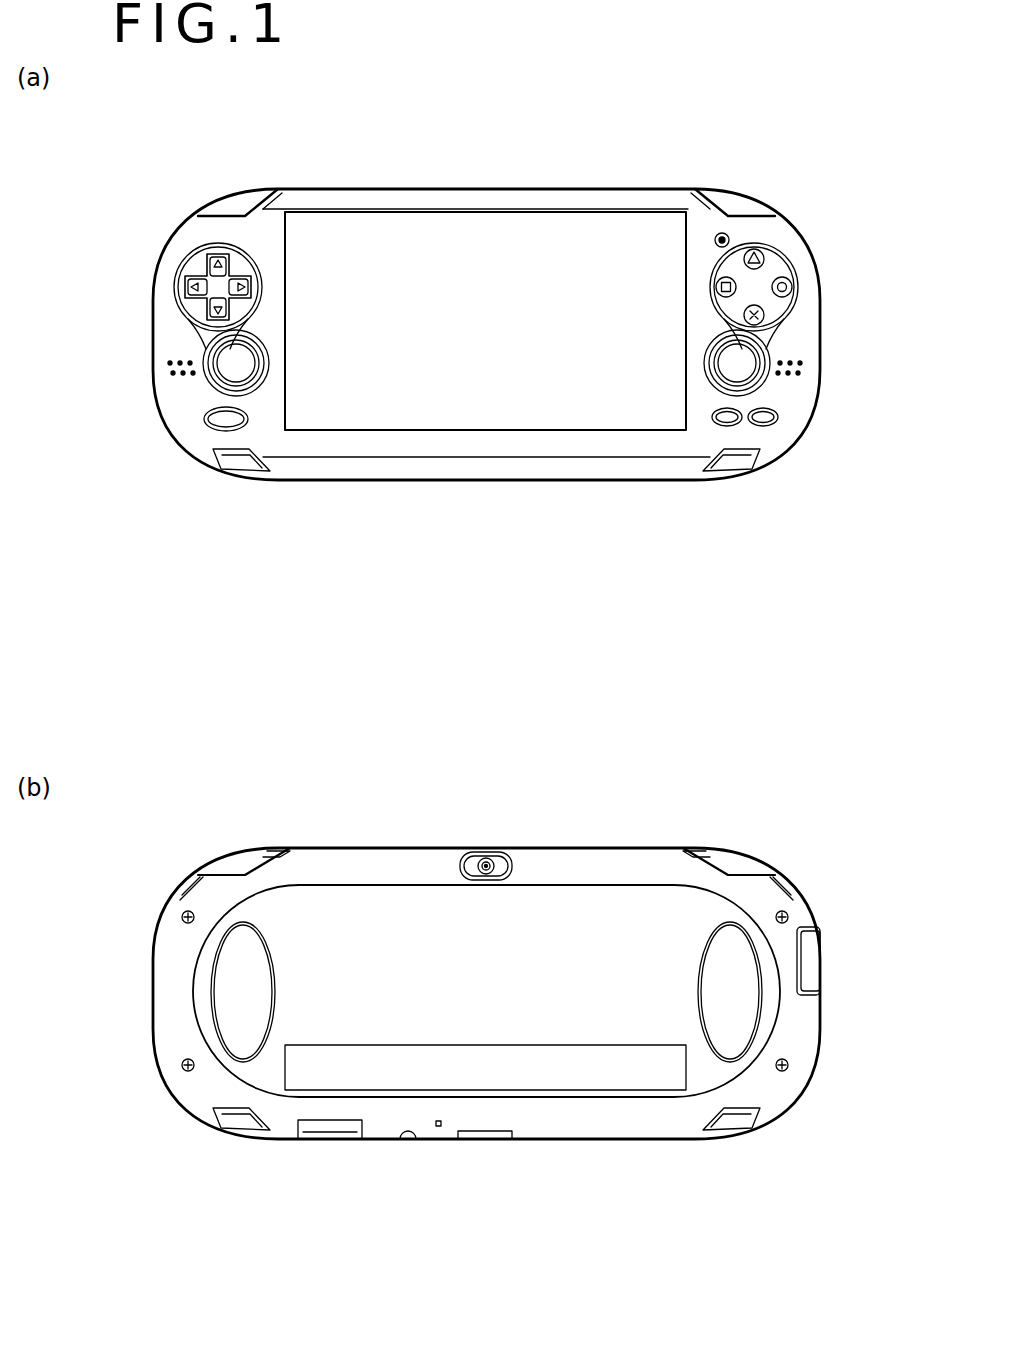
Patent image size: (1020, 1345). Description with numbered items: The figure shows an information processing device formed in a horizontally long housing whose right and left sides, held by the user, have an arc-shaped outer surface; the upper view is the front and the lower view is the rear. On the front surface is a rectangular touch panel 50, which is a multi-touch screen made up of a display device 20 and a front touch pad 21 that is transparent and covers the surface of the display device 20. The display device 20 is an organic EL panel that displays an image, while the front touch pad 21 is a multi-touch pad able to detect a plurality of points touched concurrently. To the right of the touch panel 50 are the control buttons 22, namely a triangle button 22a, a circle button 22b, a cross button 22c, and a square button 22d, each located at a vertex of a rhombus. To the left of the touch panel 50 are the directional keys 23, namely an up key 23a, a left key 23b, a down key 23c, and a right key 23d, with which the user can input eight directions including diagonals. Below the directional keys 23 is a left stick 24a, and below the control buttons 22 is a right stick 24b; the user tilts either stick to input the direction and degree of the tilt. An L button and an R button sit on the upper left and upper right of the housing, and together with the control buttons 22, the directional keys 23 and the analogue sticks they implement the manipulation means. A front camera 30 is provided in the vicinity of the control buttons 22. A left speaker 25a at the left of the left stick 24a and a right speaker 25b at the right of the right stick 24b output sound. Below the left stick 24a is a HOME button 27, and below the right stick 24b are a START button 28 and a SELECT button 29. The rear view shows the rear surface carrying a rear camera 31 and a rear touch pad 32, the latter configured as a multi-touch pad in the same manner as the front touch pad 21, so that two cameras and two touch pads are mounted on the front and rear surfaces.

The display device 20 is at (485, 228).
The front touch pad 21 is at (485, 321).
The touch panel 50 is at (485, 260).
The control buttons 22 is at (823, 288).
The triangle button 22a is at (754, 259).
The circle button 22b is at (782, 287).
The cross button 22c is at (754, 315).
The square button 22d is at (731, 288).
The directional keys 23 is at (148, 288).
The up key 23a is at (218, 266).
The left key 23b is at (197, 287).
The down key 23c is at (218, 307).
The right key 23d is at (243, 287).
The left stick 24a is at (232, 370).
The right stick 24b is at (741, 370).
The left speaker 25a is at (178, 369).
The right speaker 25b is at (801, 369).
The HOME button 27 is at (215, 421).
The START button 28 is at (766, 421).
The SELECT button 29 is at (728, 424).
The front camera 30 is at (720, 233).
The rear camera 31 is at (487, 839).
The rear touch pad 32 is at (486, 948).